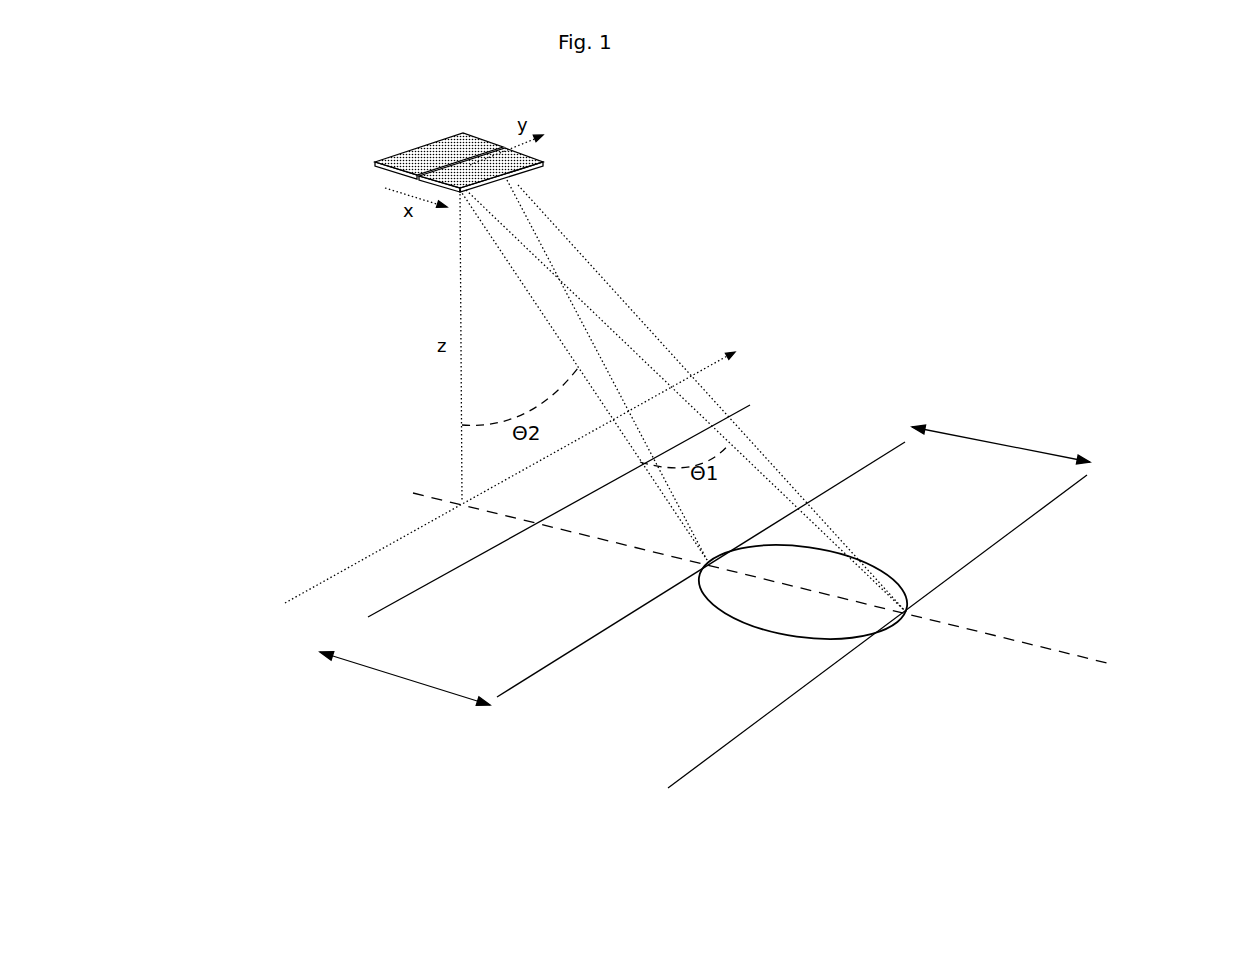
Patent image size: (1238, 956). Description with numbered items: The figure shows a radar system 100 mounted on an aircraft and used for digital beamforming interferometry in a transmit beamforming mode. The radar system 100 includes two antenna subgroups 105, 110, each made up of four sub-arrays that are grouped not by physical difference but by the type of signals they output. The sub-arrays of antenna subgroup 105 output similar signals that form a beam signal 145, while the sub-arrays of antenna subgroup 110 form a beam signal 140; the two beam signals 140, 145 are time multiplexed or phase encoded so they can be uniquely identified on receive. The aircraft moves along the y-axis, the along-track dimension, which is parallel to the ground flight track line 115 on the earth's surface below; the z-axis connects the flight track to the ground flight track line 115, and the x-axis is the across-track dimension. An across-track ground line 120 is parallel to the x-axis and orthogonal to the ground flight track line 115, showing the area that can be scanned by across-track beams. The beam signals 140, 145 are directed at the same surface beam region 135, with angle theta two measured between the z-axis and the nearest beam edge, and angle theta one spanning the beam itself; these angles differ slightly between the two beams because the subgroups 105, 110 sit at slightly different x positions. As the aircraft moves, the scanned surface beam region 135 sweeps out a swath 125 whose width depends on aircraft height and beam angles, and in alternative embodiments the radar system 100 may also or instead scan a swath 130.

The radar system 100 is at (377, 162).
The antenna subgroup 105 is at (438, 155).
The antenna subgroup 110 is at (497, 163).
The ground flight track line 115 is at (407, 537).
The across-track ground line 120 is at (1042, 650).
The swath 125 is at (1001, 440).
The swath 130 is at (405, 676).
The surface beam region 135 is at (810, 612).
The beam signal 140 is at (567, 260).
The beam signal 145 is at (497, 233).